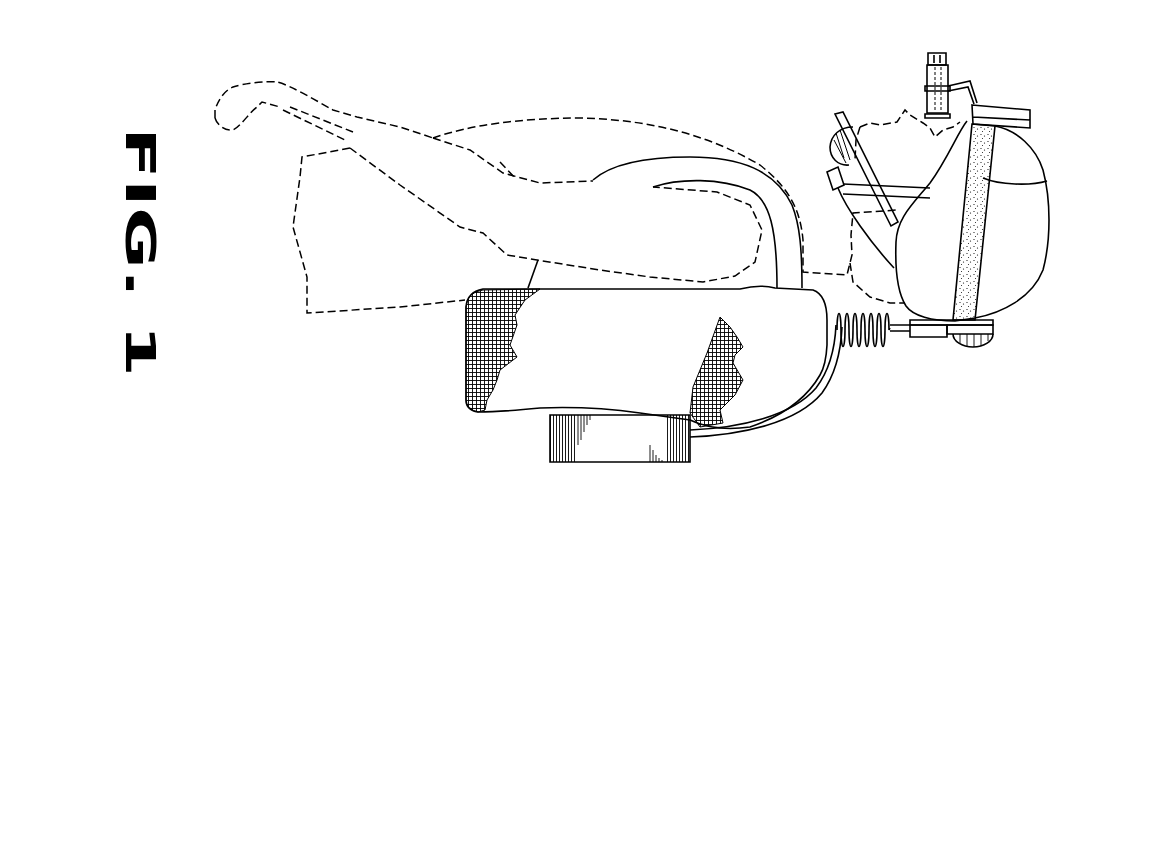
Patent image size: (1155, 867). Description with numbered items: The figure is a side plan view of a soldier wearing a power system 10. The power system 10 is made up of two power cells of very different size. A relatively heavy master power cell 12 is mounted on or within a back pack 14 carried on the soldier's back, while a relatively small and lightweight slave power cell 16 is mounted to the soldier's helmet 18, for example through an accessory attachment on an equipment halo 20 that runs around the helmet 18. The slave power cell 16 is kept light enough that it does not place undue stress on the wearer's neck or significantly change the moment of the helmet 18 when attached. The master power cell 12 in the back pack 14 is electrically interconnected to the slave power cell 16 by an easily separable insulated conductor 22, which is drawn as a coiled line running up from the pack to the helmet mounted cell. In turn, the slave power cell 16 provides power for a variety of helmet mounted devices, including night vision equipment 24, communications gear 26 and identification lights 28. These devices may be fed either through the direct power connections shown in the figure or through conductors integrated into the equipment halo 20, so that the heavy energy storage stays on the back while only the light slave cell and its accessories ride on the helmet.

The power system 10 is at (810, 307).
The master power cell 12 is at (663, 462).
The back pack 14 is at (520, 413).
The slave power cell 16 is at (933, 337).
The helmet 18 is at (1047, 243).
The equipment halo 20 is at (1047, 181).
The insulated conductor 22 is at (814, 393).
The night vision equipment 24 is at (952, 73).
The communications gear 26 is at (853, 127).
The identification lights 28 is at (985, 347).